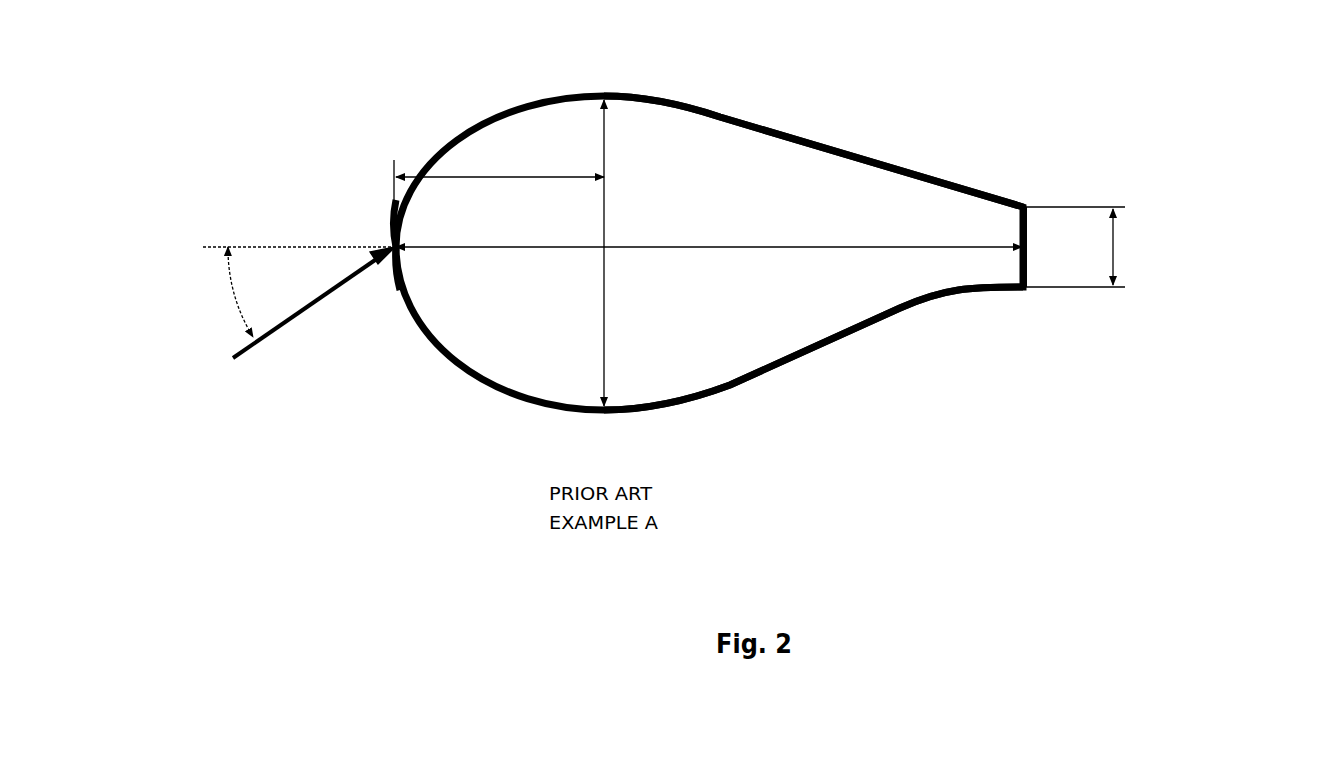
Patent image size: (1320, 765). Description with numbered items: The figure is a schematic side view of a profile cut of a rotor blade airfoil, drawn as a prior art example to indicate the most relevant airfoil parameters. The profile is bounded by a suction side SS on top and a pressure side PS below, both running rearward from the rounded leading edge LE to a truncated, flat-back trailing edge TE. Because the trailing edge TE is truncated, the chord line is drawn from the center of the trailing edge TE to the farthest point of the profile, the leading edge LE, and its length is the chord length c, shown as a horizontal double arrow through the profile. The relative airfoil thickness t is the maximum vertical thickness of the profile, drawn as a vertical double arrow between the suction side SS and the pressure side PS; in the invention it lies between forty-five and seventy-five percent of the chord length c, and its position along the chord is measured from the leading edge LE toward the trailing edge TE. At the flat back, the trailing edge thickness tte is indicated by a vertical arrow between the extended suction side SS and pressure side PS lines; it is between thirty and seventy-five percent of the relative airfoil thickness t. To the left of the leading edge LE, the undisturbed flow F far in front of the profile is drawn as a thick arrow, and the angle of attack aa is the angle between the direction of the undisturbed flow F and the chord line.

The leading edge LE is at (367, 233).
The trailing edge TE is at (1050, 230).
The suction side SS is at (720, 117).
The pressure side PS is at (758, 377).
The chord length c is at (612, 219).
The relative airfoil thickness t is at (604, 293).
The trailing edge thickness tte is at (1113, 244).
The angle of attack aa is at (232, 298).
The undisturbed flow F is at (233, 358).